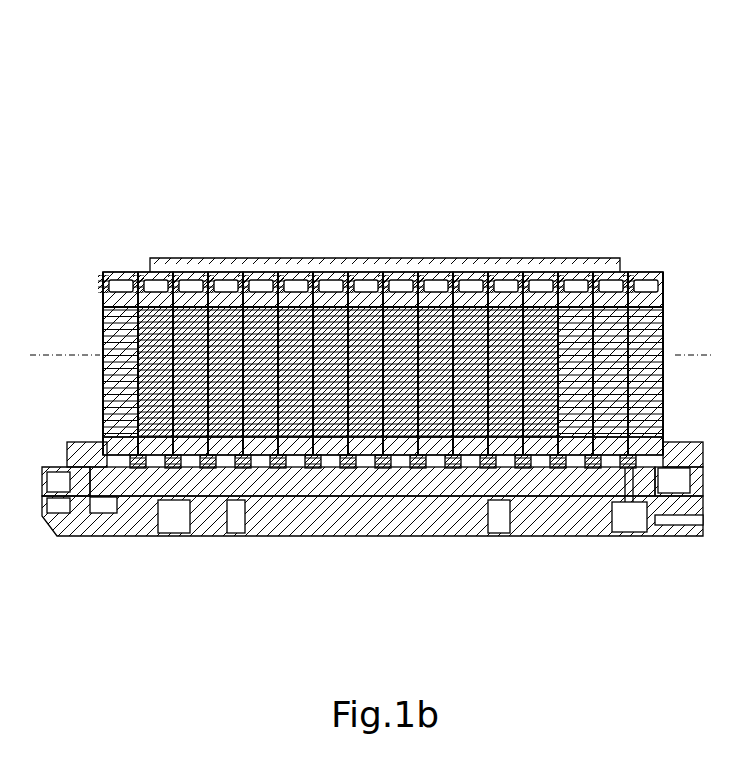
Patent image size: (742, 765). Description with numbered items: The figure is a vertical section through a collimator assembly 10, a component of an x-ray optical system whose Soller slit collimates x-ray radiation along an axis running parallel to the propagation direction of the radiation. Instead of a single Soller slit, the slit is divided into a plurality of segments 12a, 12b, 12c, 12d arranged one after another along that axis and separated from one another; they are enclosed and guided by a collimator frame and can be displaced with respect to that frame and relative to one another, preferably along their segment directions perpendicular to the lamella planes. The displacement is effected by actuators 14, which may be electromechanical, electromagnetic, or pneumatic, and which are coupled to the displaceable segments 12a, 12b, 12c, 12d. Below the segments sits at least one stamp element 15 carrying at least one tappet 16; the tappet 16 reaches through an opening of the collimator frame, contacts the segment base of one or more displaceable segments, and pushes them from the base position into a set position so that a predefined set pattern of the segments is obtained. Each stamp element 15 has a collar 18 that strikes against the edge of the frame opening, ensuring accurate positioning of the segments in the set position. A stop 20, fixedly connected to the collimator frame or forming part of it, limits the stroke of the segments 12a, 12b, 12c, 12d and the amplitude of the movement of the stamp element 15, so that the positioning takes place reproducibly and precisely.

The collimator assembly 10 is at (503, 206).
The segment 12a is at (108, 300).
The segment 12b is at (157, 272).
The segment 12c is at (190, 300).
The segment 12d is at (240, 258).
The actuator 14 is at (177, 472).
The stamp element 15 is at (385, 478).
The tappet 16 is at (292, 462).
The collar 18 is at (90, 513).
The stop 20 is at (73, 442).